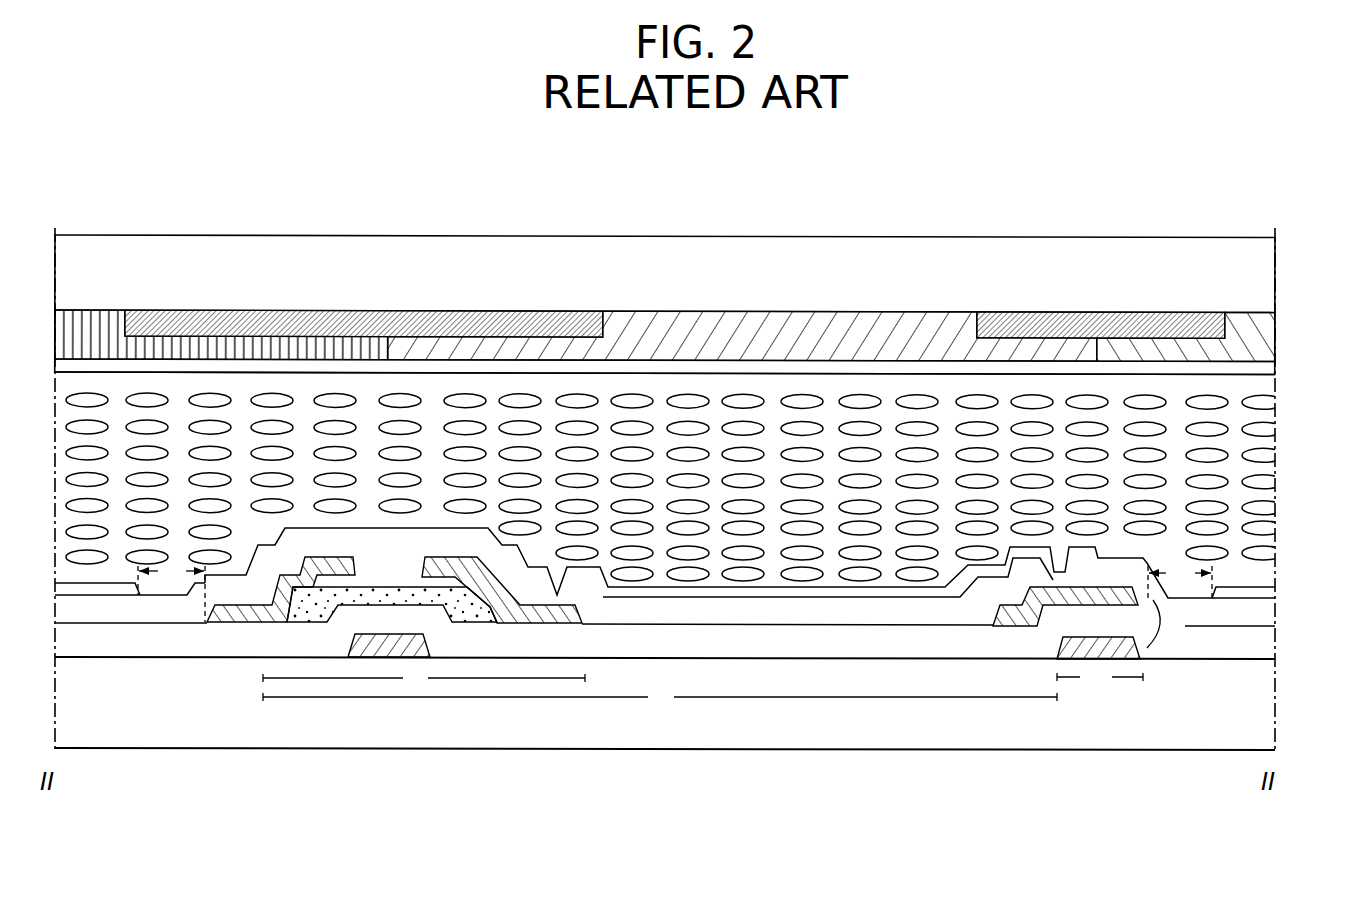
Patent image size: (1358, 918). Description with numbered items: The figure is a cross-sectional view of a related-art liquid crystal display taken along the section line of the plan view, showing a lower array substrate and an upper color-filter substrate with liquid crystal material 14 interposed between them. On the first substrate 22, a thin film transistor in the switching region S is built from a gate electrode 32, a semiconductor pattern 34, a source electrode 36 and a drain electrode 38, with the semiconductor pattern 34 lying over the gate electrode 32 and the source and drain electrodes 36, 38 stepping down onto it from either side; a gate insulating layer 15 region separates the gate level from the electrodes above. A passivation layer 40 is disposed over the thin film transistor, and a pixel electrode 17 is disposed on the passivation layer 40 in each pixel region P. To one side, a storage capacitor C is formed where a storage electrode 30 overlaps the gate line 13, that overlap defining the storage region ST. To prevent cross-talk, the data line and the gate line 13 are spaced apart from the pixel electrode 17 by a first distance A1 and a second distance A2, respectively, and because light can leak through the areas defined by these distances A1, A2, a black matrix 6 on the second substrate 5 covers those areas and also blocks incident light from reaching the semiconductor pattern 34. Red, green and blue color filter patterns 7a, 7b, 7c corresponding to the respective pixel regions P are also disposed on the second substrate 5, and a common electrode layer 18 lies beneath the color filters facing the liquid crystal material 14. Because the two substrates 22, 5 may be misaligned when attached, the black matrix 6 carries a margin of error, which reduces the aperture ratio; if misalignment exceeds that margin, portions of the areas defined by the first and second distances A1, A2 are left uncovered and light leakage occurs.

The second substrate 5 is at (696, 278).
The black matrix 6 is at (382, 318).
The red color filter pattern 7a is at (98, 330).
The green color filter pattern 7b is at (767, 328).
The blue color filter pattern 7c is at (1252, 328).
The common electrode 18 is at (1267, 368).
The liquid crystal material 14 is at (1268, 492).
The first substrate 22 is at (1206, 731).
The data line 15 is at (232, 624).
The gate electrode 32 is at (373, 658).
The gate line 13 is at (1113, 660).
The semiconductor pattern 34 is at (478, 613).
The source electrode 36 is at (317, 557).
The drain electrode 38 is at (473, 557).
The storage electrode 30 is at (1012, 618).
The passivation layer 40 is at (440, 528).
The pixel electrode 17 is at (105, 588).
The first distance A1 is at (171, 591).
The second distance A2 is at (1180, 580).
The storage capacitor C is at (1163, 624).
The switching region S is at (424, 679).
The pixel region P is at (660, 698).
The storage region ST is at (1100, 678).